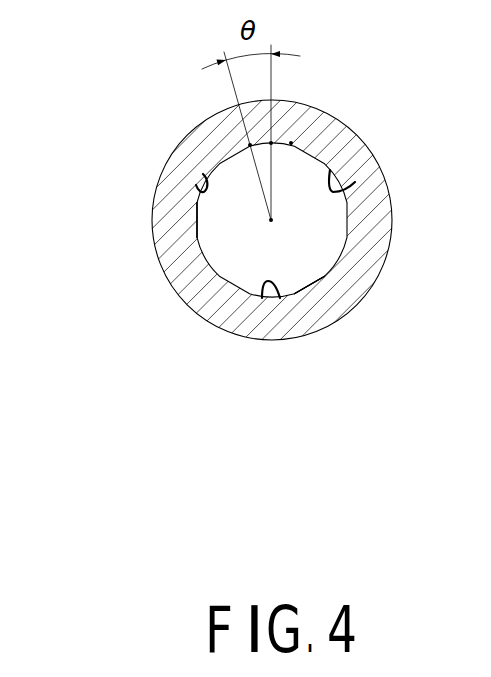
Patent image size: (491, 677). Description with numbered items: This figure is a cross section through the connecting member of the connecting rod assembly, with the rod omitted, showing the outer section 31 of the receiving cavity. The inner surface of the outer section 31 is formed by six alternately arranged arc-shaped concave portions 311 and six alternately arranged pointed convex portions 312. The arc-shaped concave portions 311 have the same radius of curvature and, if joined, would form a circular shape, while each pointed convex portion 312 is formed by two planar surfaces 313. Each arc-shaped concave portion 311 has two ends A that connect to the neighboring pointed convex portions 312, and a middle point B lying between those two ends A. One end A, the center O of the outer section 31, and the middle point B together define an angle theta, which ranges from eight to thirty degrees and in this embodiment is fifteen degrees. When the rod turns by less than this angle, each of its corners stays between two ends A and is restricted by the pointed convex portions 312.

The outer section 31 is at (307, 237).
The arc-shaped concave portion 311 is at (262, 298).
The pointed convex portion 312 is at (216, 293).
The planar surface 313 is at (198, 211).
The end A is at (250, 145).
The middle point B is at (270, 142).
The center O is at (272, 220).